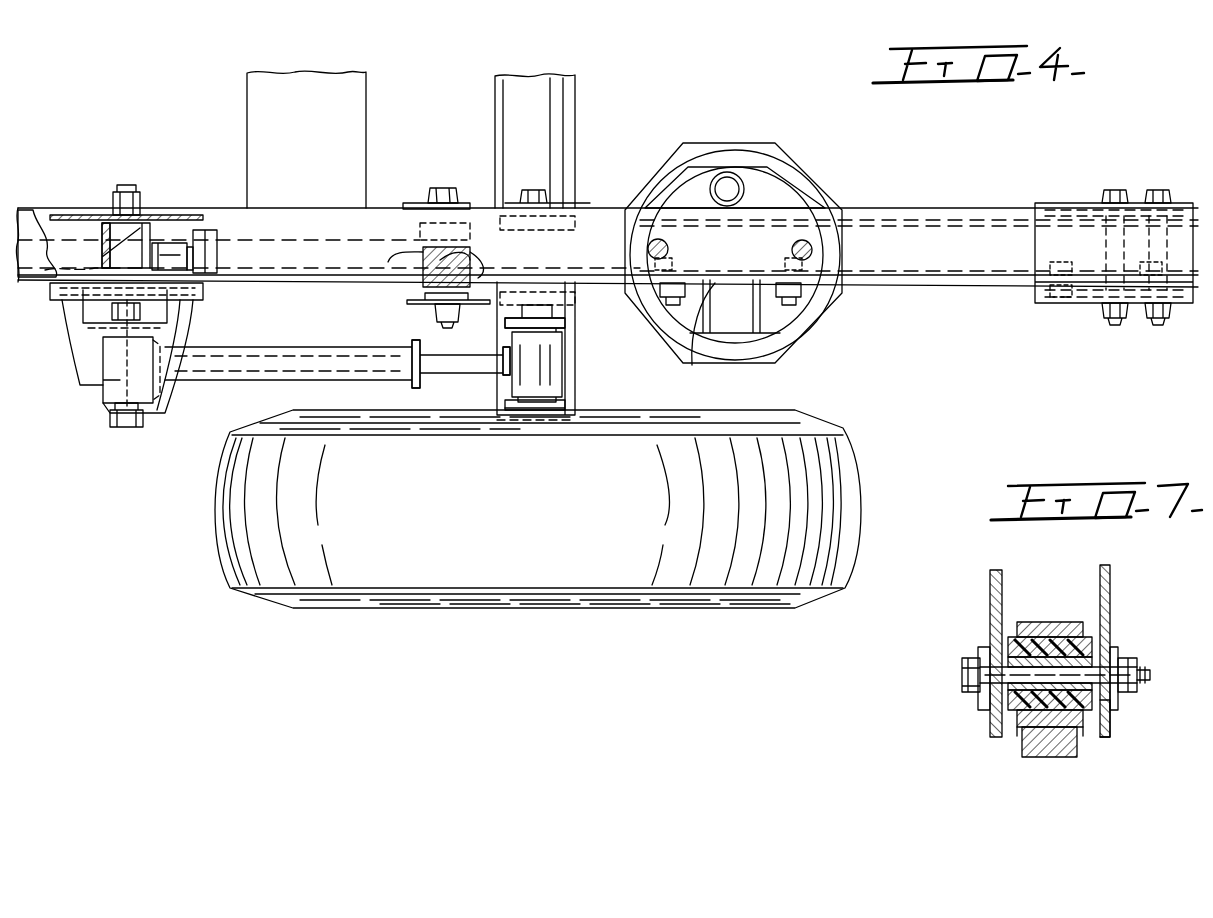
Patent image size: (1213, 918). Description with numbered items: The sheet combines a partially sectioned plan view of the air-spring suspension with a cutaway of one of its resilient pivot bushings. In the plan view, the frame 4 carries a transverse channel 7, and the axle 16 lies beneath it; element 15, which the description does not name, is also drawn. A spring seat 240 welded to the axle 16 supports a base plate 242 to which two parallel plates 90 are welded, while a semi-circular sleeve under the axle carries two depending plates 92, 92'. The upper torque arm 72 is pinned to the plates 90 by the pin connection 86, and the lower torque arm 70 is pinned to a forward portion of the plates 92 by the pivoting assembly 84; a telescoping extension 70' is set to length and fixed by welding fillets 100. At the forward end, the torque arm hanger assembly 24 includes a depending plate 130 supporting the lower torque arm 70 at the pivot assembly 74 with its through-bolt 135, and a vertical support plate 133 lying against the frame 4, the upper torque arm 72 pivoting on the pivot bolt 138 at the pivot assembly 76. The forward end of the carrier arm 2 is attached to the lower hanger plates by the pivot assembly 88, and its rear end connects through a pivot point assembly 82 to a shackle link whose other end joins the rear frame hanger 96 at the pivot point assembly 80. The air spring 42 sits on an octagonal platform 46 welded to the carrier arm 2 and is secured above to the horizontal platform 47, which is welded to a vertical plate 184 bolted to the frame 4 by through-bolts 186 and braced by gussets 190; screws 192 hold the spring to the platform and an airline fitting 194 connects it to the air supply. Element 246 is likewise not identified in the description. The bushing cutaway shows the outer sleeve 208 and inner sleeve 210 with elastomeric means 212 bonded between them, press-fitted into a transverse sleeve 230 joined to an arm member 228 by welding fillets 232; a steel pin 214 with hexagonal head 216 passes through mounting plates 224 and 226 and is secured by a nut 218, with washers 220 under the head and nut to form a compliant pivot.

In FIG. 4, the carrier arm 2 is at (894, 288).
In FIG. 4, the frame 4 is at (931, 255).
In FIG. 4, the transverse channel 7 is at (366, 104).
In FIG. 4, the wheel tire 15 is at (858, 472).
In FIG. 4, the axle 16 is at (576, 104).
In FIG. 4, the forward torque arm hanger assembly 24 is at (198, 328).
In FIG. 4, the air spring 42 is at (780, 322).
In FIG. 4, the octagonal platform 46 is at (765, 364).
In FIG. 4, the horizontal platform 47 is at (805, 306).
In FIG. 4, the lower torque arm 70 is at (214, 225).
In FIG. 4, the telescoping torque arm extension 70' is at (166, 228).
In FIG. 4, the upper torque arm 72 is at (205, 384).
In FIG. 4, the lower torque arm pivot assembly 74 is at (100, 240).
In FIG. 4, the upper torque arm pivot assembly 76 is at (100, 376).
In FIG. 4, the pivot point assembly 80 is at (1115, 188).
In FIG. 4, the pivot point assembly 82 is at (1158, 188).
In FIG. 4, the pivoting assembly 84 is at (420, 270).
In FIG. 4, the pin connection 86 is at (568, 357).
In FIG. 4, the pivot assembly 88 is at (542, 185).
In FIG. 4, the parallel plates 90 is at (563, 322).
In FIG. 4, the lower depending plates 92 is at (393, 317).
In FIG. 4, the lower axle hanger plate 92' is at (428, 176).
In FIG. 4, the rear frame hanger 96 is at (1060, 204).
In FIG. 4, the welding fillets 100 is at (418, 390).
In FIG. 4, the depending plate 130 is at (190, 225).
In FIG. 4, the vertical support plate 133 is at (48, 284).
In FIG. 4, the through-bolt 135 is at (130, 186).
In FIG. 4, the pivot bolt 138 is at (130, 428).
In FIG. 4, the vertical plate 184 is at (692, 366).
In FIG. 4, the through-bolts 186 is at (782, 265).
In FIG. 4, the gussets 190 is at (752, 326).
In FIG. 4, the screws 192 is at (795, 243).
In FIG. 4, the airline fitting 194 is at (745, 180).
In FIG. 4, the spring seat 240 is at (412, 345).
In FIG. 4, the base plate 242 is at (490, 318).
In FIG. 4, the nut 246 is at (476, 200).
In FIG. 7, the outer cylindrical sleeve 208 is at (1095, 627).
In FIG. 7, the inner cylindrical sleeve 210 is at (1110, 726).
In FIG. 7, the elastomeric means 212 is at (1092, 648).
In FIG. 7, the steel pin 214 is at (1150, 674).
In FIG. 7, the hexagonal head 216 is at (962, 675).
In FIG. 7, the nut 218 is at (1128, 658).
In FIG. 7, the washers 220 is at (980, 652).
In FIG. 7, the mounting plate 224 is at (990, 585).
In FIG. 7, the mounting plate 226 is at (1110, 578).
In FIG. 7, the arm member 228 is at (1048, 758).
In FIG. 7, the transverse sleeve 230 is at (1040, 622).
In FIG. 7, the welding fillets 232 is at (1020, 732).